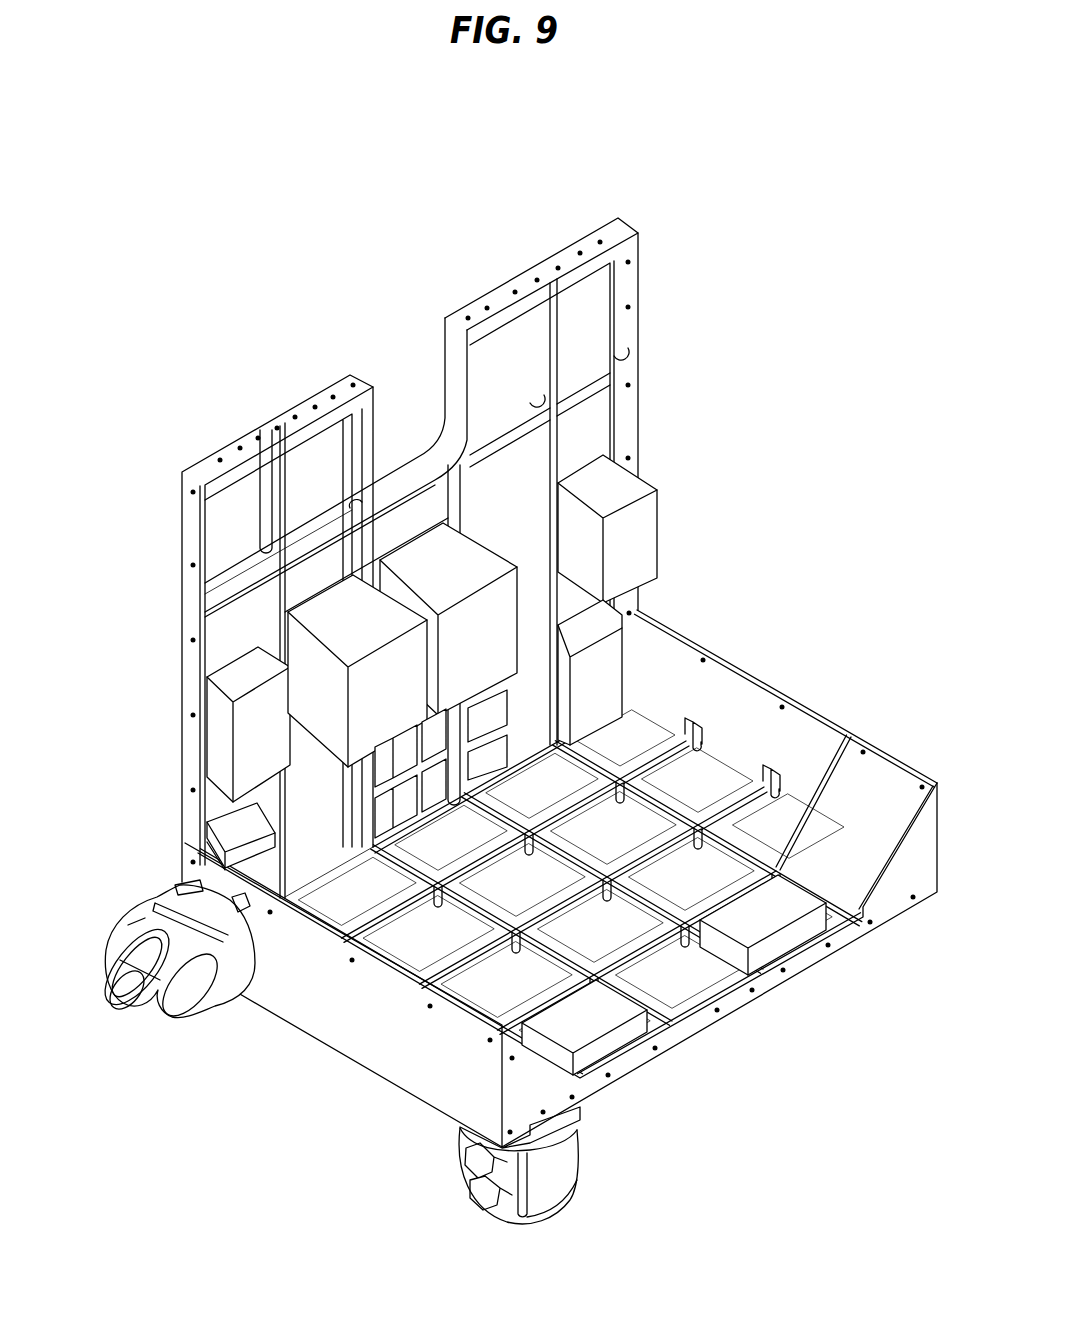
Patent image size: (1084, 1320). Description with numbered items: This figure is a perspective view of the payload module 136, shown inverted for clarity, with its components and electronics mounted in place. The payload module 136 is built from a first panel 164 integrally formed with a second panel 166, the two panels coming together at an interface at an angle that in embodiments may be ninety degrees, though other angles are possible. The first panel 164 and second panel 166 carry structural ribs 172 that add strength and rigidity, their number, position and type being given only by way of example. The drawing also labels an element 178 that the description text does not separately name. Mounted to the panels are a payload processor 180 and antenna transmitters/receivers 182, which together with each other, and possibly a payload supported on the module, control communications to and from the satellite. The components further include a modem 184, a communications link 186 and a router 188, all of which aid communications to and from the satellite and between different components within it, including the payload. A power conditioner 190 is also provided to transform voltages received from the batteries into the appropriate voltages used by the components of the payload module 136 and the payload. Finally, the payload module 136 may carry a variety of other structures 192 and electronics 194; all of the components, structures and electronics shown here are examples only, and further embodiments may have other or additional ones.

The payload module 136 is at (834, 347).
The first panel 164 is at (598, 341).
The second panel 166 is at (768, 830).
The structural ribs 172 is at (553, 345).
The floor plate 178 is at (520, 762).
The payload processor 180 is at (640, 540).
The antenna transmitters/receivers 182 is at (438, 575).
The modem 184 is at (598, 667).
The communications link 186 is at (127, 993).
The router 188 is at (783, 910).
The power conditioner 190 is at (272, 746).
The other structures 192 is at (272, 870).
The electronics 194 is at (393, 822).